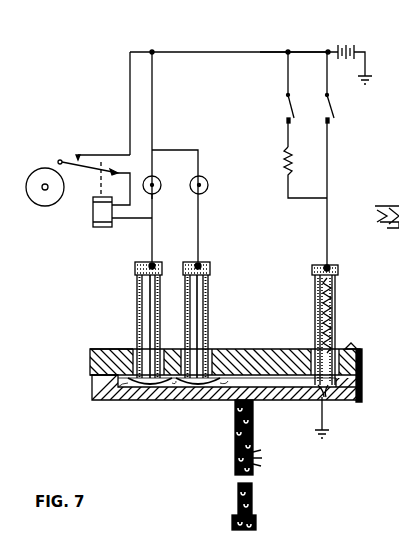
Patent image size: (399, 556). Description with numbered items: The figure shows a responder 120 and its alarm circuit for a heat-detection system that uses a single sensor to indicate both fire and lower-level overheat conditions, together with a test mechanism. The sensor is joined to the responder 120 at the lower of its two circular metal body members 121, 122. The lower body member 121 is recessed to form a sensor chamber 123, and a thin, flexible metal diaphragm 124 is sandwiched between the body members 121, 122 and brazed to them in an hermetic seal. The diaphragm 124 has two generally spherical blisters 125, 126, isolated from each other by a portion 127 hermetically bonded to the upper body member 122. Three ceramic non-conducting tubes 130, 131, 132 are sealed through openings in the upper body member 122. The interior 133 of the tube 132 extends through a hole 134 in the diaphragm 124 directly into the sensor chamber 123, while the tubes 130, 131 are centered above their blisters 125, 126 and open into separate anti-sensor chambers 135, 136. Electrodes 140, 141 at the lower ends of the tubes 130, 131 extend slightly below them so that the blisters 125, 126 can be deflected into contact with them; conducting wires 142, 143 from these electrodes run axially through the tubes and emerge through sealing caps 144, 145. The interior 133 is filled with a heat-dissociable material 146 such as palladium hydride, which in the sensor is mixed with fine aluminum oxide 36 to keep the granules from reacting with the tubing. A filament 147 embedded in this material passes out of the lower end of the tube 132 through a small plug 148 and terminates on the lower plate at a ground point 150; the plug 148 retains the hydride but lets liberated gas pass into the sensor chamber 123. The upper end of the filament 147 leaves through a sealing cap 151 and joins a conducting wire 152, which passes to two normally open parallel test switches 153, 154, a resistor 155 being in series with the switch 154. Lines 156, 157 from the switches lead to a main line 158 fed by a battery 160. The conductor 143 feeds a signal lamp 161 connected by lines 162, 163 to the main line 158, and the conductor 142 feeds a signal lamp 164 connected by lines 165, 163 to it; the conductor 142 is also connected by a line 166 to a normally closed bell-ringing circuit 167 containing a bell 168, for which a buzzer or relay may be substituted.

The aluminum oxide 36 is at (270, 458).
The responder 120 is at (90, 349).
The lower body member 121 is at (94, 393).
The upper body member 122 is at (92, 358).
The sensor chamber 123 is at (270, 394).
The diaphragm 124 is at (96, 374).
The blister 125 is at (134, 388).
The blister 126 is at (196, 382).
The portion 127 is at (176, 382).
The tube 130 is at (134, 285).
The tube 131 is at (208, 290).
The tube 132 is at (316, 290).
The interior of tube 133 is at (320, 342).
The hole 134 is at (321, 397).
The anti-sensor chamber 135 is at (150, 390).
The anti-sensor chamber 136 is at (198, 391).
The electrode 140 is at (135, 352).
The electrode 141 is at (224, 352).
The conducting wire 142 is at (149, 308).
The conducting wire 143 is at (204, 311).
The sealing cap 144 is at (134, 262).
The sealing cap 145 is at (205, 262).
The heat-dissociable material 146 is at (318, 303).
The filament 147 is at (320, 320).
The plug 148 is at (363, 389).
The ground point 150 is at (318, 424).
The sealing cap 151 is at (308, 266).
The conducting wire 152 is at (326, 238).
The test switch 153 is at (339, 118).
The test switch 154 is at (286, 120).
The resistor 155 is at (284, 166).
The line 156 is at (329, 76).
The line 157 is at (288, 79).
The main line 158 is at (324, 52).
The battery 160 is at (350, 45).
The signal lamp 161 is at (208, 187).
The line 162 is at (183, 147).
The line 163 is at (152, 103).
The signal lamp 164 is at (154, 195).
The line 165 is at (152, 175).
The line 166 is at (146, 225).
The bell-ringing circuit 167 is at (93, 212).
The bell 168 is at (45, 169).